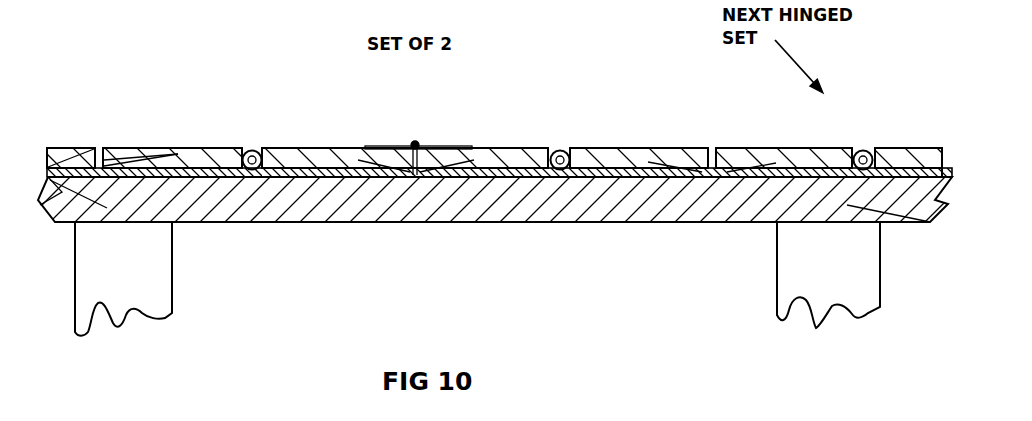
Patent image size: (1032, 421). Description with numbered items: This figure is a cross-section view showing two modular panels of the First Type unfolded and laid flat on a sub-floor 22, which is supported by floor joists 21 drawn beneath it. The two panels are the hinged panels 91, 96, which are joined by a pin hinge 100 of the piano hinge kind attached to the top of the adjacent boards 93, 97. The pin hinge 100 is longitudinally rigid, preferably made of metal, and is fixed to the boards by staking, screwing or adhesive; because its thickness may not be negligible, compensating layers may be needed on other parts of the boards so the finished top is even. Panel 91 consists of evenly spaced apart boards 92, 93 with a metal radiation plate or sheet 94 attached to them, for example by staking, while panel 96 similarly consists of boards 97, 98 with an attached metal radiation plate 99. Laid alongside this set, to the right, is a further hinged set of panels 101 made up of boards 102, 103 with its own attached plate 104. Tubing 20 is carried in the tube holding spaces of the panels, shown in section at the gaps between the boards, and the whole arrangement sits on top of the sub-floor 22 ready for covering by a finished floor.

The tubing 20 is at (250, 150).
The floor joists 21 is at (172, 292).
The sub-floor 22 is at (392, 222).
The hinged panel 91 is at (269, 115).
The board 92 is at (163, 150).
The board 93 is at (330, 155).
The metal radiation plate 94 is at (190, 173).
The hinged panel 96 is at (605, 125).
The board 97 is at (492, 150).
The board 98 is at (690, 152).
The metal radiation plate 99 is at (497, 176).
The pin hinge 100 is at (412, 143).
The hinged set of panels 101 is at (881, 122).
The board 102 is at (783, 152).
The board 103 is at (897, 155).
The plate 104 is at (793, 177).